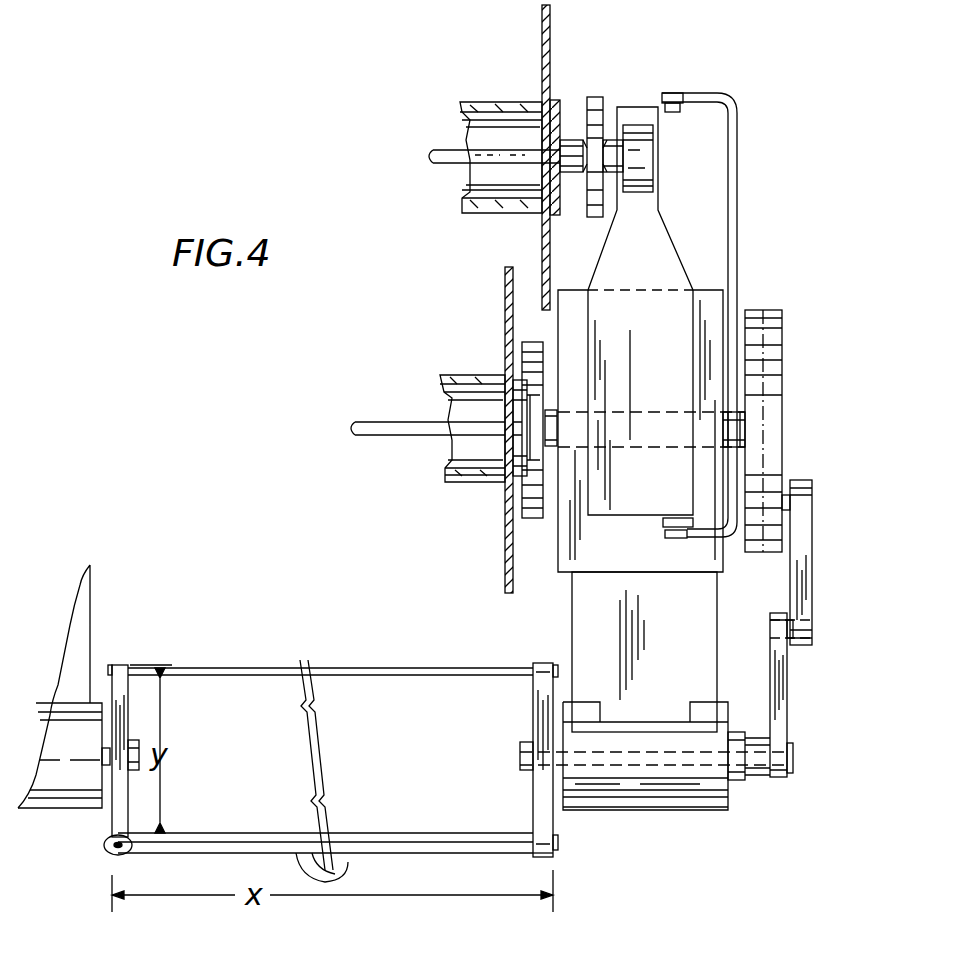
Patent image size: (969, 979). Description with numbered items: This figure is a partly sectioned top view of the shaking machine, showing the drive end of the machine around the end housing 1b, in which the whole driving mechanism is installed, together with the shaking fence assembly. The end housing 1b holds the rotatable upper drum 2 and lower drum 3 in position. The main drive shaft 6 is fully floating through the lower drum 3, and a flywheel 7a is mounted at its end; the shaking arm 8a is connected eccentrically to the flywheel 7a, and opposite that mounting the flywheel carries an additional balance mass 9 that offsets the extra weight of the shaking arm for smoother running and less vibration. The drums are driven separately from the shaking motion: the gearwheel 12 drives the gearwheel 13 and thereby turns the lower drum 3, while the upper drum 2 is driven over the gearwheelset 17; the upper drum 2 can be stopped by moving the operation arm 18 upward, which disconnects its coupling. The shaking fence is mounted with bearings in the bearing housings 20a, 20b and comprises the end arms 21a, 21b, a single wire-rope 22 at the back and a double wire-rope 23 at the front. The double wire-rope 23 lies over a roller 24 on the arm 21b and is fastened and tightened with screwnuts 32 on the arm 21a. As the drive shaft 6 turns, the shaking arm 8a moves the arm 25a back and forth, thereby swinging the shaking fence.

The end housing 1b is at (566, 570).
The upper drum 2 is at (483, 102).
The lower drum 3 is at (482, 486).
The main drive shaft 6 is at (402, 438).
The flywheel 7a is at (781, 427).
The shaking arm 8a is at (798, 580).
The balance mass 9 is at (780, 345).
The gearwheel 12 is at (522, 378).
The gearwheel 13 is at (528, 342).
The gearwheelset 17 is at (592, 218).
The operation arm 18 is at (733, 96).
The bearing housing 20a is at (576, 638).
The bearing housing 20b is at (80, 630).
The end arm 21a is at (553, 822).
The end arm 21b is at (110, 822).
The single wire-rope 22 is at (320, 668).
The double wire-rope 23 is at (344, 875).
The roller 24 is at (108, 852).
The arm 25a is at (782, 695).
The screwnuts 32 is at (556, 858).